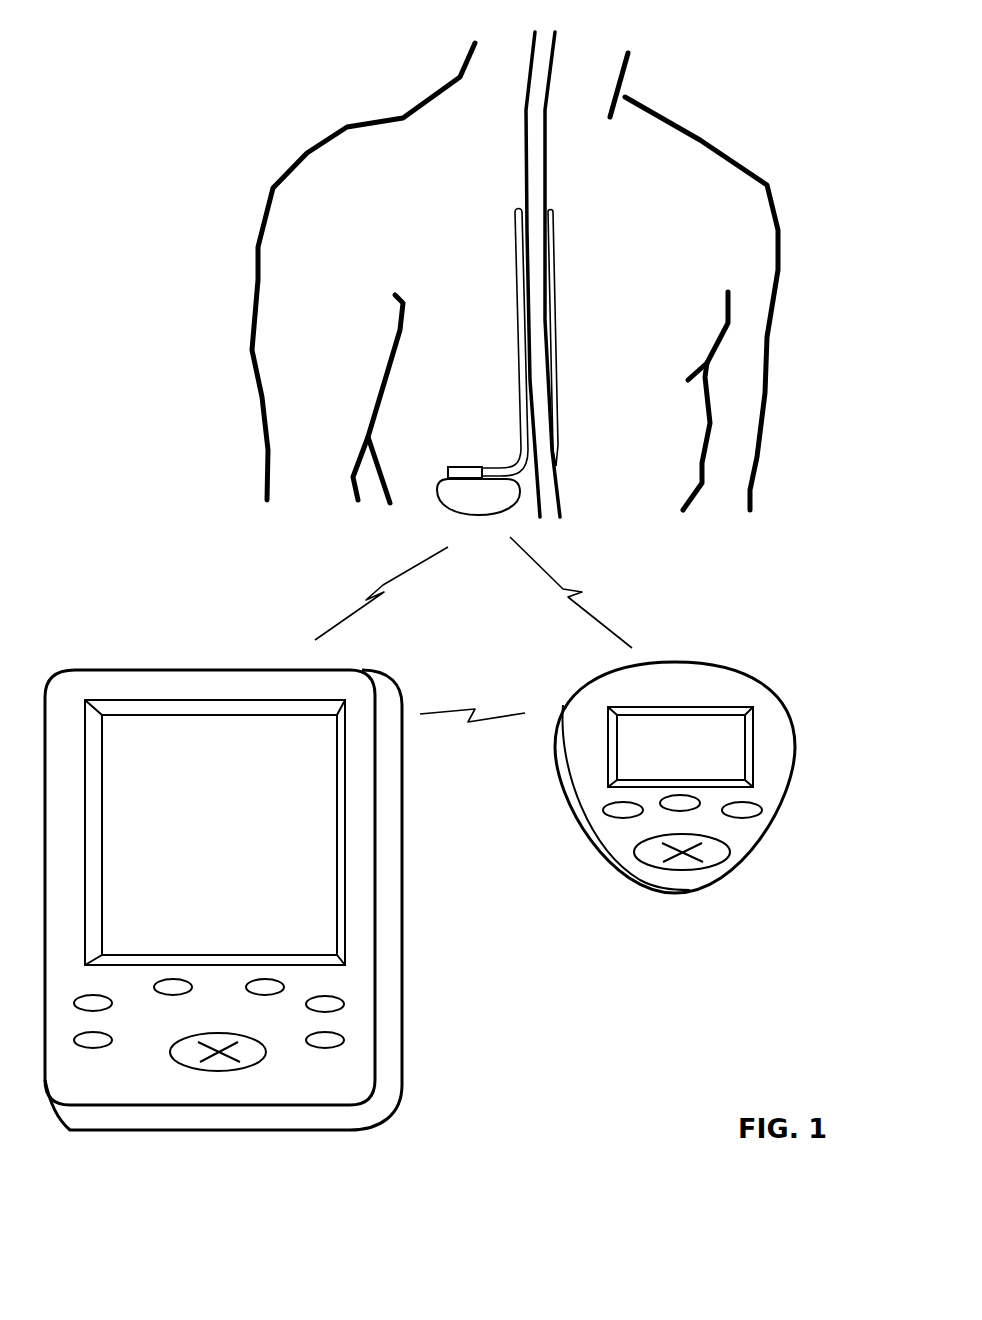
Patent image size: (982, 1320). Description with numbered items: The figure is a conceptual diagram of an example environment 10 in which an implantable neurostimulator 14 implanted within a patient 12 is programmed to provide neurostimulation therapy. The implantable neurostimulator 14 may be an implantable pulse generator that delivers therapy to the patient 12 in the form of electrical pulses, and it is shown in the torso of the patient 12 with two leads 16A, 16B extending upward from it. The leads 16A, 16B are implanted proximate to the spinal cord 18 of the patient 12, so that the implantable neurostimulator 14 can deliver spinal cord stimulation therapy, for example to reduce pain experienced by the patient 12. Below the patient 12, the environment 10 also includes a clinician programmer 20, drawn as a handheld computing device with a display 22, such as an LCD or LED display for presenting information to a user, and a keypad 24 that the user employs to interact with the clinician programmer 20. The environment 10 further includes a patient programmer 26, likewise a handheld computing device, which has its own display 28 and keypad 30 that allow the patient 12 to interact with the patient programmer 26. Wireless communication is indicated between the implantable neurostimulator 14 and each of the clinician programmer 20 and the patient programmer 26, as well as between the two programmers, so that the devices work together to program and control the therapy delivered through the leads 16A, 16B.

The environment 10 is at (138, 112).
The patient 12 is at (710, 125).
The implantable neurostimulator 14 is at (436, 472).
The lead 16A is at (511, 318).
The lead 16B is at (565, 313).
The spinal cord 18 is at (564, 165).
The clinician programmer 20 is at (279, 870).
The display 22 is at (298, 833).
The keypad 24 is at (303, 1057).
The patient programmer 26 is at (646, 755).
The display 28 is at (632, 758).
The keypad 30 is at (633, 835).